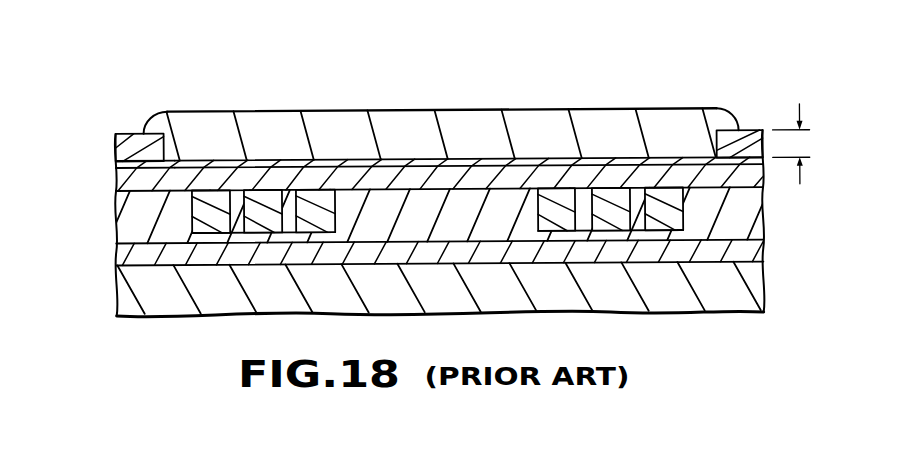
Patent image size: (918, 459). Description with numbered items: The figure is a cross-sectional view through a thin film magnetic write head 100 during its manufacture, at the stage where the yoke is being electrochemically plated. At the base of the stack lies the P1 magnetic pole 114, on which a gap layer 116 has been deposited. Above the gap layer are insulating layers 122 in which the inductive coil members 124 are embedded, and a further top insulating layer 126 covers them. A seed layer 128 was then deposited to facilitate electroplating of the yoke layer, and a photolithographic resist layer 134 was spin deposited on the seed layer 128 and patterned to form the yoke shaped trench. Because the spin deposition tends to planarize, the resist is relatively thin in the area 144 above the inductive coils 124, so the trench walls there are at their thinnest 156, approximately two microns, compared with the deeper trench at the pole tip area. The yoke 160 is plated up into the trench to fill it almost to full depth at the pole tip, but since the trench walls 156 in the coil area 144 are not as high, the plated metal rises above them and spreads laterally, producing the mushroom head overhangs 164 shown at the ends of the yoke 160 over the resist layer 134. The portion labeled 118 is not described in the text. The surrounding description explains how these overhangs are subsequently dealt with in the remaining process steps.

The thin film magnetic write head 100 is at (347, 42).
The P1 magnetic pole 114 is at (116, 285).
The gap layer 116 is at (116, 252).
The passivation layer edge portion 118 is at (117, 163).
The insulating layers 122 is at (116, 215).
The inductive coil members 124 is at (262, 200).
The top insulating layer 126 is at (116, 179).
The seed layer 128 is at (767, 175).
The photolithographic resist layer 134 is at (131, 132).
The area above the inductive coils 144 is at (473, 150).
The thinnest trench walls 156 is at (791, 144).
The yoke 160 is at (544, 109).
The mushroom head overhangs 164 is at (156, 112).